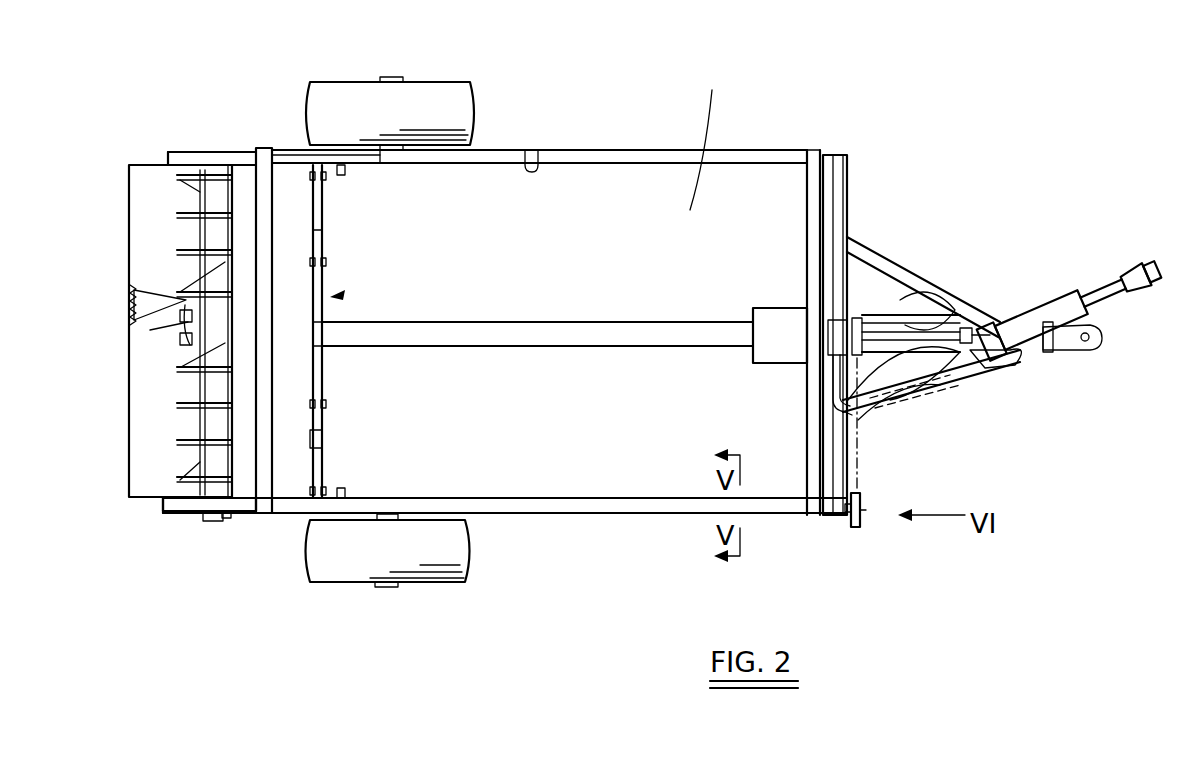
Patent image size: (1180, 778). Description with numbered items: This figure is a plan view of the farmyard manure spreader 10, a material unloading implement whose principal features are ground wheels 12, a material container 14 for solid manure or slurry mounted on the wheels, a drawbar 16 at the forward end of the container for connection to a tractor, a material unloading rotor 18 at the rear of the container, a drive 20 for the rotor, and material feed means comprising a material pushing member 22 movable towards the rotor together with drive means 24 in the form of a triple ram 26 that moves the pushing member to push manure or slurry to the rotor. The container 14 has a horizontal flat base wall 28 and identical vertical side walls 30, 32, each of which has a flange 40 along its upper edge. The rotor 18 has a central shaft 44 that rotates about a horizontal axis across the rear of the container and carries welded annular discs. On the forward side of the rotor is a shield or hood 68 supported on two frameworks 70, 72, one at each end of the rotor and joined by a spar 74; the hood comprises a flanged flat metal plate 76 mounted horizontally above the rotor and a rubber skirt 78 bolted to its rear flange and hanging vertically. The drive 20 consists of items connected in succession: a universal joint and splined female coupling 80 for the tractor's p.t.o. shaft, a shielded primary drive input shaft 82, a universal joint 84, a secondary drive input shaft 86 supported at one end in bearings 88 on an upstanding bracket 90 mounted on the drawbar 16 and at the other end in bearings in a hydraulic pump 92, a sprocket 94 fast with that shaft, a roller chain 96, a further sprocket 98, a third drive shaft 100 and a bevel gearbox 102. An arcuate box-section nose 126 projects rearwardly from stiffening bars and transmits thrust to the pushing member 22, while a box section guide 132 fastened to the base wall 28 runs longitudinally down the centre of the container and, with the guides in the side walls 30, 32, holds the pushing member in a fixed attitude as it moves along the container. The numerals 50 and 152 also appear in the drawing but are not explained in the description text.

The farmyard manure spreader 10 is at (895, 161).
The ground wheels 12 is at (318, 96).
The material container 14 is at (682, 150).
The drawbar 16 is at (960, 352).
The material unloading rotor 18 is at (163, 450).
The drive 20 is at (868, 316).
The material pushing member 22 is at (795, 197).
The drive means 24 is at (905, 316).
The triple ram 26 is at (905, 368).
The base wall 28 is at (708, 134).
The side wall 30 is at (572, 496).
The side wall 32 is at (533, 150).
The flange 40 is at (458, 165).
The central shaft 44 is at (195, 500).
The mixing blades 50 is at (182, 288).
The shield or hood 68 is at (343, 296).
The framework 70 is at (290, 500).
The framework 72 is at (200, 150).
The spar 74 is at (262, 370).
The flanged flat metal plate 76 is at (305, 247).
The rubber skirt 78 is at (318, 447).
The universal joint and splined female coupling 80 is at (1150, 278).
The shielded primary drive input shaft 82 is at (1103, 303).
The universal joint 84 is at (1008, 368).
The secondary drive input shaft 86 is at (990, 315).
The bearings 88 is at (950, 382).
The upstanding bracket 90 is at (922, 322).
The hydraulic pump 92 is at (828, 330).
The sprocket 94 is at (880, 370).
The roller chain 96 is at (862, 475).
The sprocket 98 is at (865, 527).
The third drive shaft 100 is at (866, 510).
The bevel gearbox 102 is at (213, 523).
The arcuate box-section nose 126 is at (770, 362).
The box section guide 132 is at (648, 322).
The fasteners 152 is at (358, 175).